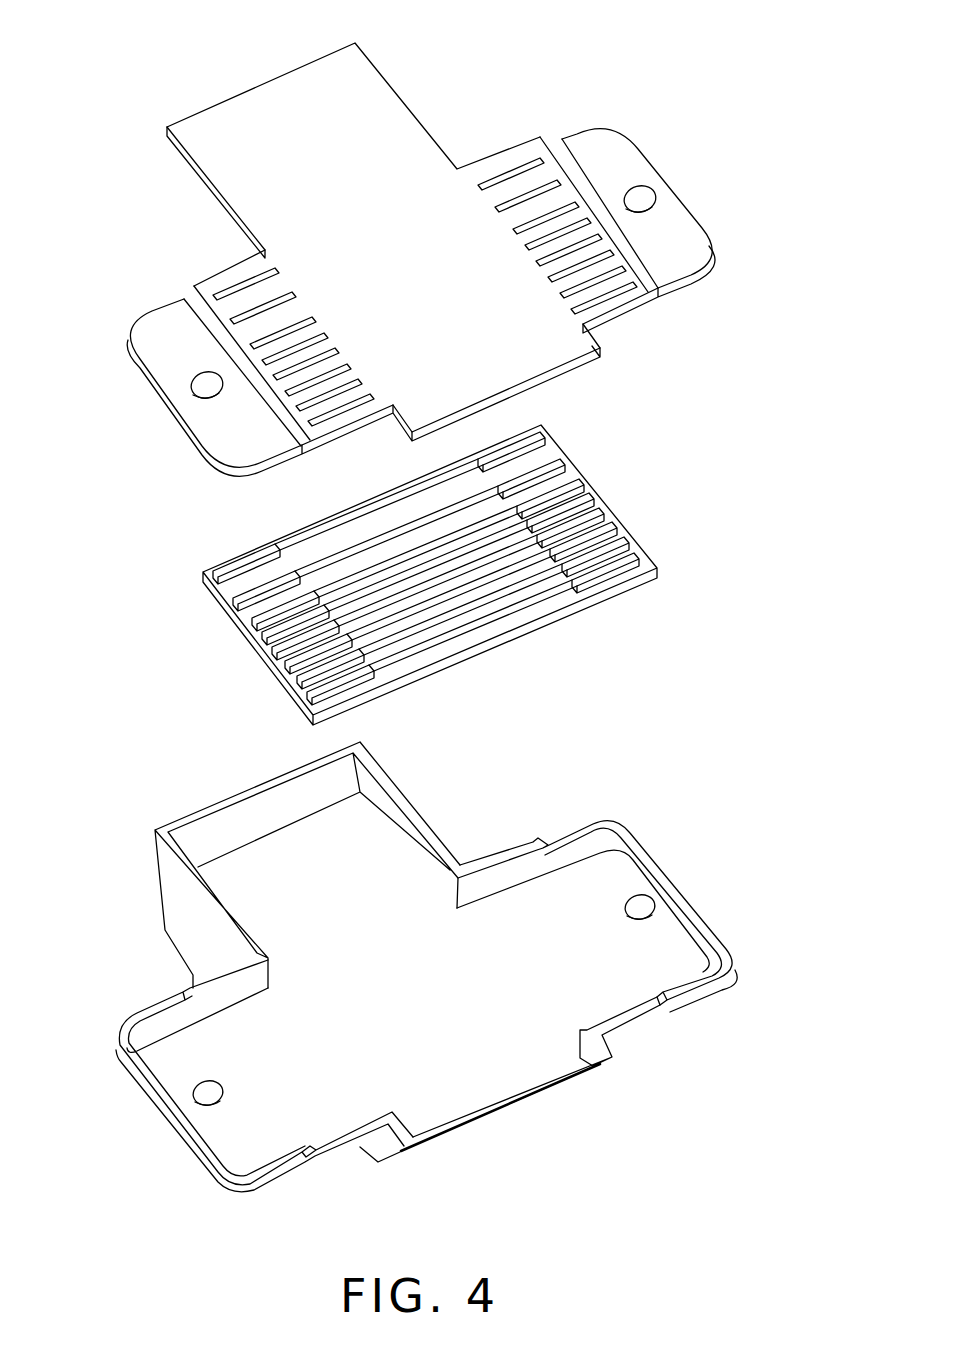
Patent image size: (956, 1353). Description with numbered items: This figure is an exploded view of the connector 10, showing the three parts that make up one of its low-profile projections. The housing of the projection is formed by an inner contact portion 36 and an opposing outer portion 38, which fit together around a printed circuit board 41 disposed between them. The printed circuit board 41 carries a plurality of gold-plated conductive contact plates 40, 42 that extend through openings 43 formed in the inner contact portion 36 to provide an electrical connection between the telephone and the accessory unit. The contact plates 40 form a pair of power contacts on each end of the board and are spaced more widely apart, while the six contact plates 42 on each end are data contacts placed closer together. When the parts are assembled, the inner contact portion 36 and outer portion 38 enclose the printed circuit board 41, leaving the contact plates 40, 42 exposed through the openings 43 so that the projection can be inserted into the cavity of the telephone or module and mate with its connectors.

The connector assembly 10 is at (774, 15).
The inner contact portion 36 is at (421, 246).
The outer portion 38 is at (243, 1130).
The contact plates 40 is at (212, 573).
The printed circuit board 41 is at (420, 572).
The contact plates 42 is at (307, 695).
The openings 43 is at (507, 165).